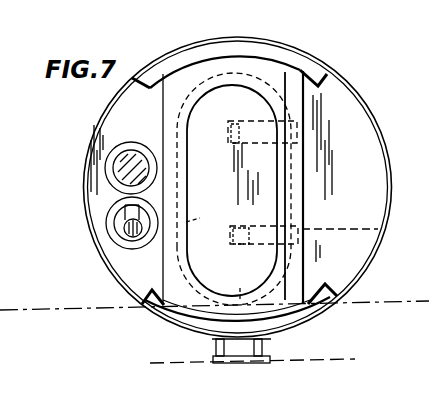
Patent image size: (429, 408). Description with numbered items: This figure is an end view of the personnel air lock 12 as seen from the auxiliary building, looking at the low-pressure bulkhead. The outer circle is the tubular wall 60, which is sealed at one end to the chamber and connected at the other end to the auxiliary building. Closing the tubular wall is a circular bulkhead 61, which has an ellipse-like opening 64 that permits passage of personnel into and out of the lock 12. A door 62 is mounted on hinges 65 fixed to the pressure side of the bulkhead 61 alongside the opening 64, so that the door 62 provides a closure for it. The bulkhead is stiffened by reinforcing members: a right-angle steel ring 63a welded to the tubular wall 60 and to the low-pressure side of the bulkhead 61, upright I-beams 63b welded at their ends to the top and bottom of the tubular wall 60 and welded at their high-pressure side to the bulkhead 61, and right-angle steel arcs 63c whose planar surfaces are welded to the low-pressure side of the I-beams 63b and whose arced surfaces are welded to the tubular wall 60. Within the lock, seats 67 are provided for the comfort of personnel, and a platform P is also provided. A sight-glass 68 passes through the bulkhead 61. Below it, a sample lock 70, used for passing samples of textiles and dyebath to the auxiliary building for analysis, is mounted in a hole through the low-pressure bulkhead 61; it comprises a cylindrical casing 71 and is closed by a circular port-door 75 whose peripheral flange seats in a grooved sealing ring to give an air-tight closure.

The personnel air lock 12 is at (241, 36).
The tubular wall 60 is at (96, 128).
The circular bulkhead 61 is at (345, 192).
The door 62 is at (243, 192).
The reinforcing member 63a is at (300, 312).
The reinforcing member 63b is at (170, 262).
The reinforcing member 63c is at (273, 60).
The ellipse-like opening 64 is at (197, 107).
The hinge 65 is at (256, 124).
The seat 67 is at (352, 218).
The sight-glass 68 is at (140, 146).
The sample lock 70 is at (108, 218).
The cylindrical casing 71 is at (148, 208).
The circular port-door 75 is at (130, 235).
The platform P is at (236, 287).